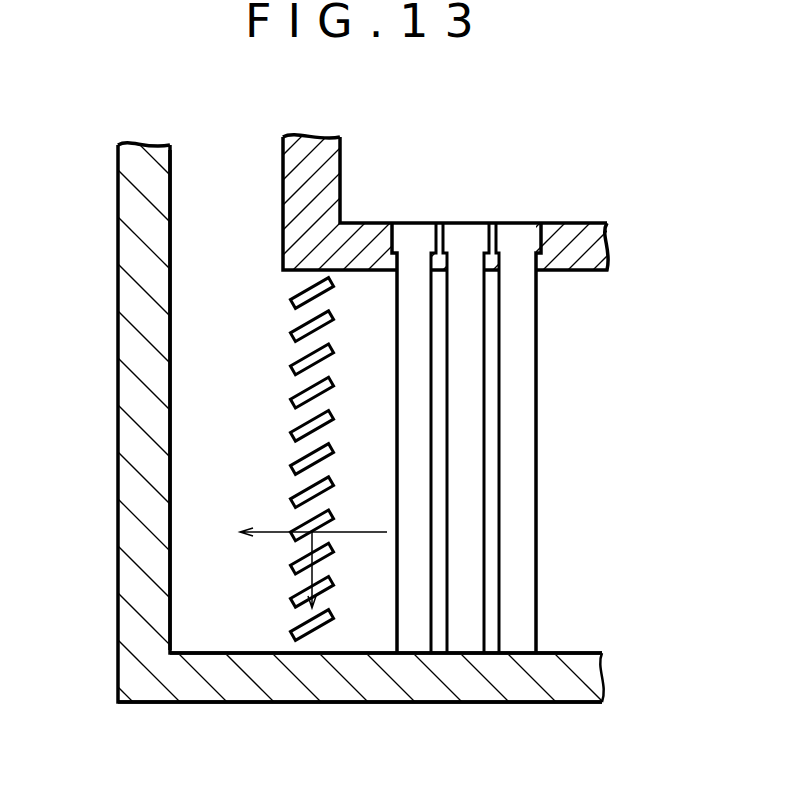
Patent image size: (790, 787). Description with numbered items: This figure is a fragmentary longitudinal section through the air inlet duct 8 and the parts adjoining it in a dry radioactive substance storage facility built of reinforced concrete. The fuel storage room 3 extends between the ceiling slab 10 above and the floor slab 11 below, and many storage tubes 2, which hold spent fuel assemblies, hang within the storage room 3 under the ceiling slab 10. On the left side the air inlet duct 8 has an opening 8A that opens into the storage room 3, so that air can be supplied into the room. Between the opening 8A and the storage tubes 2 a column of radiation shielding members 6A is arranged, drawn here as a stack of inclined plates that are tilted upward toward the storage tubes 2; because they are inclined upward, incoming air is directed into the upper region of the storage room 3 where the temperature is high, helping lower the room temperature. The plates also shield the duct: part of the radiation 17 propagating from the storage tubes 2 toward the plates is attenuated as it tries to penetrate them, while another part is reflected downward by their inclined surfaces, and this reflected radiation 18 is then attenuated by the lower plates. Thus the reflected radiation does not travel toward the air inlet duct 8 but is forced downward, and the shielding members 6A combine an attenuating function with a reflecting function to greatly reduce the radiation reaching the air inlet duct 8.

The air inlet duct 8 is at (187, 184).
The opening 8A is at (215, 268).
The floor slab 11 is at (568, 687).
The ceiling slab 10 is at (578, 232).
The storage tube 2 is at (538, 400).
The fuel storage room 3 is at (580, 568).
The radiation shielding member 6A is at (296, 328).
The radiation 17 is at (364, 530).
The reflected radiation 18 is at (310, 575).